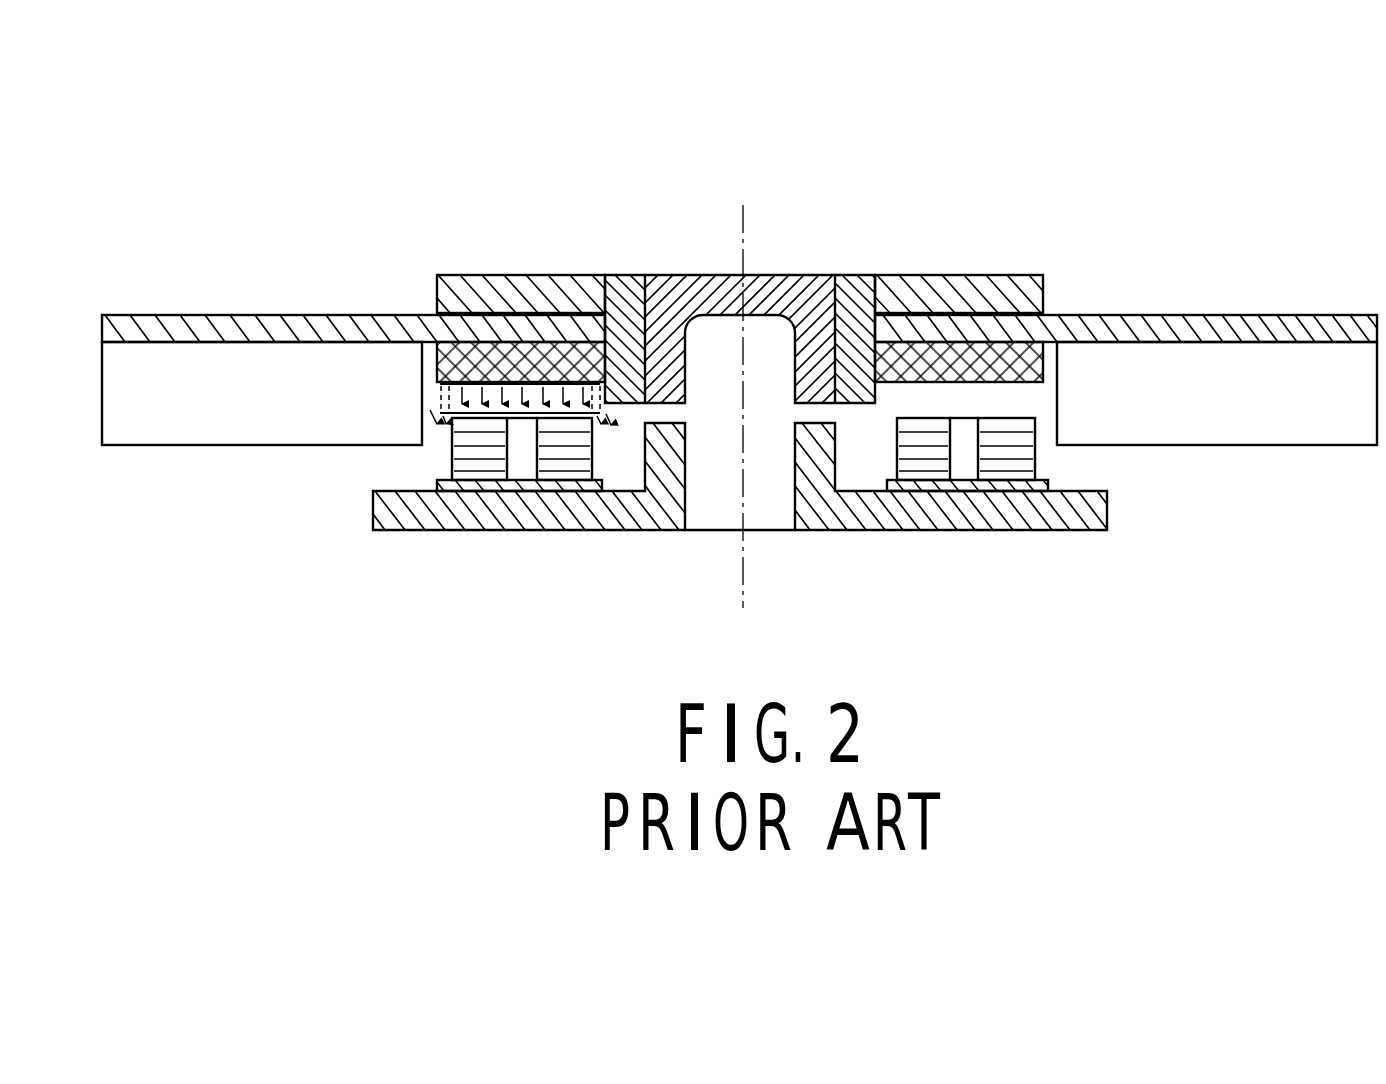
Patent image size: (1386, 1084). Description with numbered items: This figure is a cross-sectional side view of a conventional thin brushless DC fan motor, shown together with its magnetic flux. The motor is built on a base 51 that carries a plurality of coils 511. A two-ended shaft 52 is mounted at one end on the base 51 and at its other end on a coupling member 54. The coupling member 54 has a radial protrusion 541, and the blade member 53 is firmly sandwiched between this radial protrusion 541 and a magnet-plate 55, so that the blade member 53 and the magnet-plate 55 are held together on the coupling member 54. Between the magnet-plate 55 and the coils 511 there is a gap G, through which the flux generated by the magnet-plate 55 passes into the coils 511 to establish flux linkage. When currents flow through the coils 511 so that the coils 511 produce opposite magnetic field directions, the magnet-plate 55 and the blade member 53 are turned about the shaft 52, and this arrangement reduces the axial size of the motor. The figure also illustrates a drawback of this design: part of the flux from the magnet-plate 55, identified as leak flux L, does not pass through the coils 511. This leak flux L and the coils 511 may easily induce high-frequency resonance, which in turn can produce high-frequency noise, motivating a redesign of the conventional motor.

The base 51 is at (385, 513).
The coils 511 is at (467, 455).
The shaft 52 is at (710, 513).
The blade member 53 is at (1235, 412).
The coupling member 54 is at (849, 282).
The radial protrusion 541 is at (499, 290).
The magnet-plate 55 is at (1033, 360).
The leak flux L is at (427, 415).
The gap G is at (523, 425).